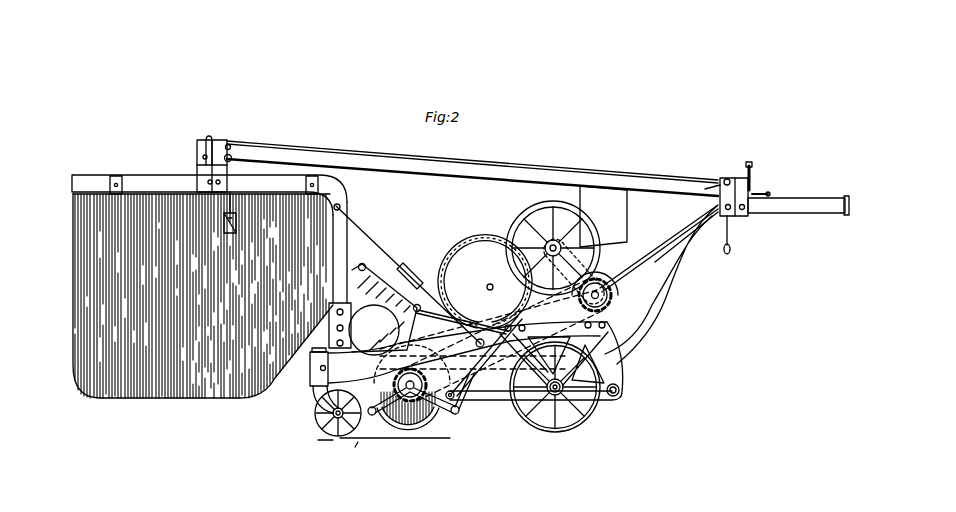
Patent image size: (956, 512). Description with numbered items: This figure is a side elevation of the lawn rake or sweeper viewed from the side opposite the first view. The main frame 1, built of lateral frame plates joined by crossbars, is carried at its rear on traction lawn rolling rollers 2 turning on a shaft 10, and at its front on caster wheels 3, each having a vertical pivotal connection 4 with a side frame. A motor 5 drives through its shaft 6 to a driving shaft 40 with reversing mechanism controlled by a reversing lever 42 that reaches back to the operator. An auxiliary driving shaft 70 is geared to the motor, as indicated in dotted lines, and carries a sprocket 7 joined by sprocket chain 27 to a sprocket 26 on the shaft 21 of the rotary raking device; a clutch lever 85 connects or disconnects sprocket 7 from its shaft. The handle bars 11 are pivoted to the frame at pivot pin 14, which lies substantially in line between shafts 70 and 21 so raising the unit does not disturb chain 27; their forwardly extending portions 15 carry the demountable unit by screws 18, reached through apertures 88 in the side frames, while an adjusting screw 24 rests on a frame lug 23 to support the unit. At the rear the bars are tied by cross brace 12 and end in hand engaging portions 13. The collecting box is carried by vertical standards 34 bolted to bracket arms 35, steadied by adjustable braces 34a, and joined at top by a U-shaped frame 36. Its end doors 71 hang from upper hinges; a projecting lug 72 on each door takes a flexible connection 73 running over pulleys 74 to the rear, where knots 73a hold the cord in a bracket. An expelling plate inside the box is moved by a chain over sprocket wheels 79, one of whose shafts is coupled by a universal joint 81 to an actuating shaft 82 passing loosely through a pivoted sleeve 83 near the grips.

The main frame 1 is at (618, 364).
The traction lawn rolling rollers 2 is at (600, 407).
The caster wheels 3 is at (330, 426).
The pivotal connection 4 is at (314, 371).
The motor 5 is at (621, 222).
The shaft 6 is at (548, 243).
The sprocket 7 is at (613, 296).
The shaft 10 is at (584, 410).
The handle bars 11 is at (668, 303).
The cross brace 12 is at (734, 218).
The hand engaging portions 13 is at (805, 203).
The pivot pin 14 is at (578, 308).
The forwardly extending portions 15 is at (461, 318).
The counter-sunk screw 18 is at (491, 340).
The shaft 21 is at (404, 397).
The lug 23 is at (356, 447).
The adjusting screw 24 is at (380, 341).
The sprocket 26 is at (421, 394).
The sprocket chain 27 is at (545, 352).
The vertical standards 34 is at (342, 268).
The adjustable braces 34a is at (369, 238).
The bracket arms 35 is at (330, 336).
The U-shaped frame 36 is at (136, 184).
The driving shaft 40 is at (488, 285).
The reversing lever 42 is at (661, 243).
The auxiliary driving shaft 70 is at (599, 297).
The doors 71 is at (135, 375).
The projecting lug 72 is at (236, 229).
The flexible connection 73 is at (462, 176).
The knots or enlargements 73a is at (712, 188).
The pulleys 74 is at (232, 156).
The sprocket wheels 79 is at (207, 138).
The universal joint 81 is at (229, 140).
The actuating shaft 82 is at (612, 178).
The sleeve 83 is at (724, 180).
The clutch lever 85 is at (672, 245).
The apertures 88 is at (472, 374).